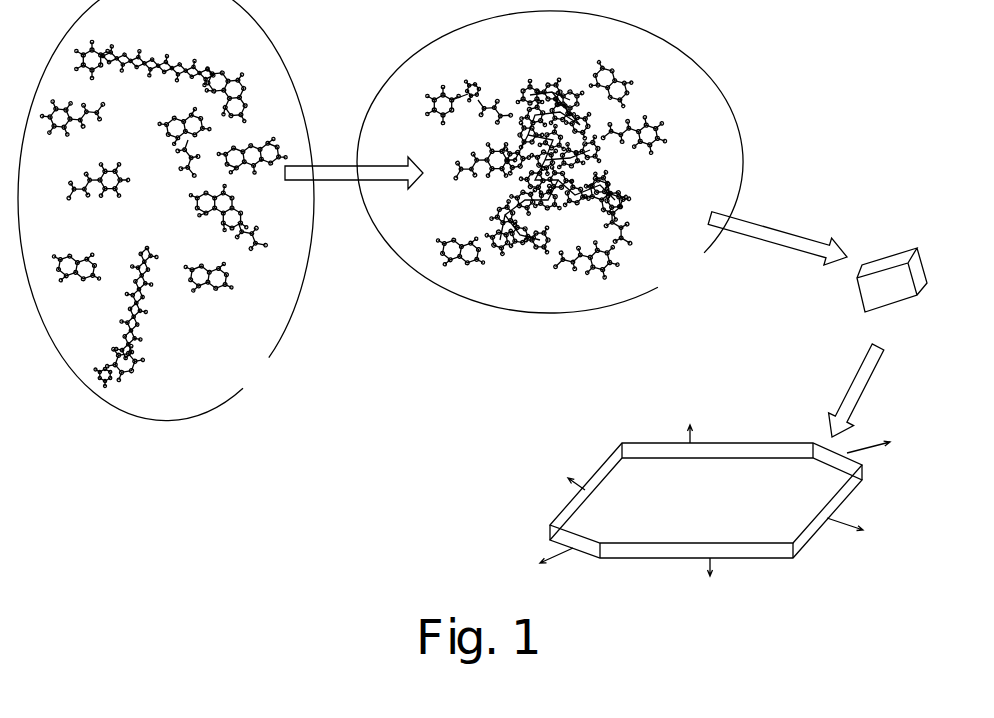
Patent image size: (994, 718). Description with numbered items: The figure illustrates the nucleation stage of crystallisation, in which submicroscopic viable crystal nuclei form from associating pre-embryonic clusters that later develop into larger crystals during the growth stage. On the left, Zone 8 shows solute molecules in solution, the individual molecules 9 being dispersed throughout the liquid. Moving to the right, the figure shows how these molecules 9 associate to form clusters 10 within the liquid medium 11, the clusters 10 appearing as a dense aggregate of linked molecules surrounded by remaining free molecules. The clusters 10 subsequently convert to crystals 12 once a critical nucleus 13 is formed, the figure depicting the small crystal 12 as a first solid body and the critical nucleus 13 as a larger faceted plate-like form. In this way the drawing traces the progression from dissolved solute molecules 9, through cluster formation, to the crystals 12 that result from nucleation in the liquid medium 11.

The Zone 8 is at (166, 210).
The molecules 9 is at (196, 192).
The clusters 10 is at (557, 164).
The liquid medium 11 is at (550, 162).
The crystals 12 is at (894, 291).
The critical nucleus 13 is at (682, 519).